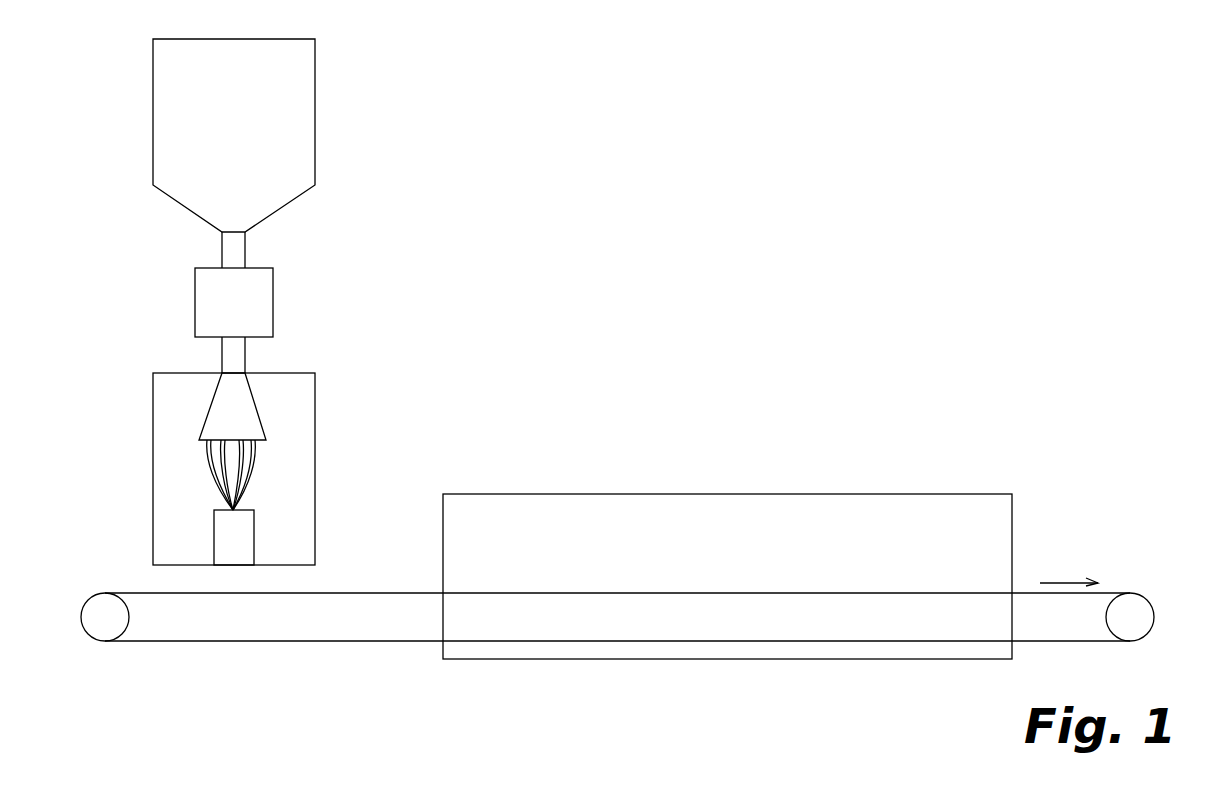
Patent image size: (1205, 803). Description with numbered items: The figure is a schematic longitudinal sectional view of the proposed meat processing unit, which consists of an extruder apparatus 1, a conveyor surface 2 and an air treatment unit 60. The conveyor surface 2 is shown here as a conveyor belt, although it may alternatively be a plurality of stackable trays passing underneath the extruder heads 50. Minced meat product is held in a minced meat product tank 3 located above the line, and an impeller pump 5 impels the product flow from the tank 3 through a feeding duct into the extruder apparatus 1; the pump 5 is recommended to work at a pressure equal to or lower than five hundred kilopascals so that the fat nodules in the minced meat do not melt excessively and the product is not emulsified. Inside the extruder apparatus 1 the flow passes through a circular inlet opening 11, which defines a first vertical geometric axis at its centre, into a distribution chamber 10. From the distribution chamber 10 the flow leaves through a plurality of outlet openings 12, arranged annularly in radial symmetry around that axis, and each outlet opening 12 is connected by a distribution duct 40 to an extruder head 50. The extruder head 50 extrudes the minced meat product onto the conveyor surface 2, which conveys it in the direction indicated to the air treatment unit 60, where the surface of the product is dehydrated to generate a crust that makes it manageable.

The extruder apparatus 1 is at (165, 413).
The conveyor surface 2 is at (351, 592).
The minced meat product tank 3 is at (229, 146).
The impeller pump 5 is at (225, 316).
The distribution chamber 10 is at (217, 433).
The circular inlet opening 11 is at (235, 372).
The outlet openings 12 is at (284, 475).
The distribution duct 40 is at (248, 472).
The extruder head 50 is at (217, 553).
The air treatment unit 60 is at (479, 552).